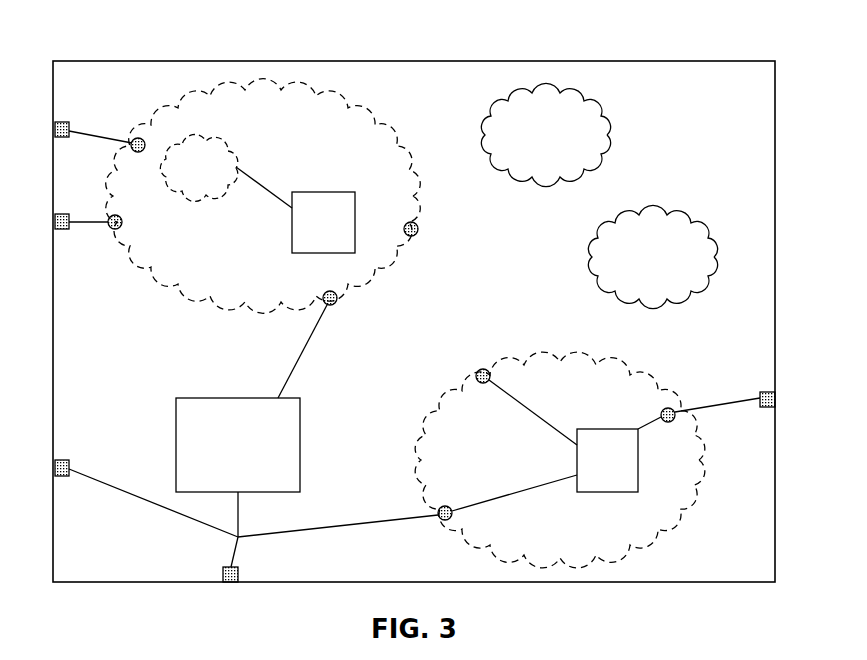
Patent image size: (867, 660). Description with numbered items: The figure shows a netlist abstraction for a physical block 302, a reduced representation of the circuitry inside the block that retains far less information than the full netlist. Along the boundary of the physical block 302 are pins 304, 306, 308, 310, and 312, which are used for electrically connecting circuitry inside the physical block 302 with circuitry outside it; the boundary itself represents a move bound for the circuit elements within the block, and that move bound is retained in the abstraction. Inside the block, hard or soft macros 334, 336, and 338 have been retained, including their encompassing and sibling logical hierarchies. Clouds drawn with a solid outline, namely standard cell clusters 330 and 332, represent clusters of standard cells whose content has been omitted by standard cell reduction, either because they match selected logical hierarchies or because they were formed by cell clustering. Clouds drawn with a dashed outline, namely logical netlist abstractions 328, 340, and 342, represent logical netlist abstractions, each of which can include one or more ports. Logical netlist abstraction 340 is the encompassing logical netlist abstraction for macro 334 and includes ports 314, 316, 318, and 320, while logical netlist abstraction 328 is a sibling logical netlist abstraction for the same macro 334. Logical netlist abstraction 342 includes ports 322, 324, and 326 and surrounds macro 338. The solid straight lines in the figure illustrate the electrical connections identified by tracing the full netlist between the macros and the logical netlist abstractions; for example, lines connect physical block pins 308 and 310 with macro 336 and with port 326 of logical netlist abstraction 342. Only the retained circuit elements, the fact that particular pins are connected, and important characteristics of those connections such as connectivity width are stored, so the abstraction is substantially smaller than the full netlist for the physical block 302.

The physical block 302 is at (414, 298).
The pin 304 is at (40, 131).
The pin 306 is at (40, 222).
The pin 308 is at (41, 469).
The pin 310 is at (232, 588).
The pin 312 is at (788, 398).
The port 314 is at (126, 132).
The port 316 is at (108, 238).
The port 318 is at (346, 308).
The port 320 is at (429, 230).
The port 322 is at (483, 363).
The port 324 is at (681, 401).
The port 326 is at (446, 530).
The logical netlist abstraction 328 is at (198, 168).
The standard cell cluster 330 is at (545, 134).
The standard cell cluster 332 is at (652, 256).
The macro 334 is at (323, 222).
The macro 336 is at (238, 445).
The macro 338 is at (607, 460).
The logical netlist abstraction 340 is at (383, 127).
The logical netlist abstraction 342 is at (688, 490).